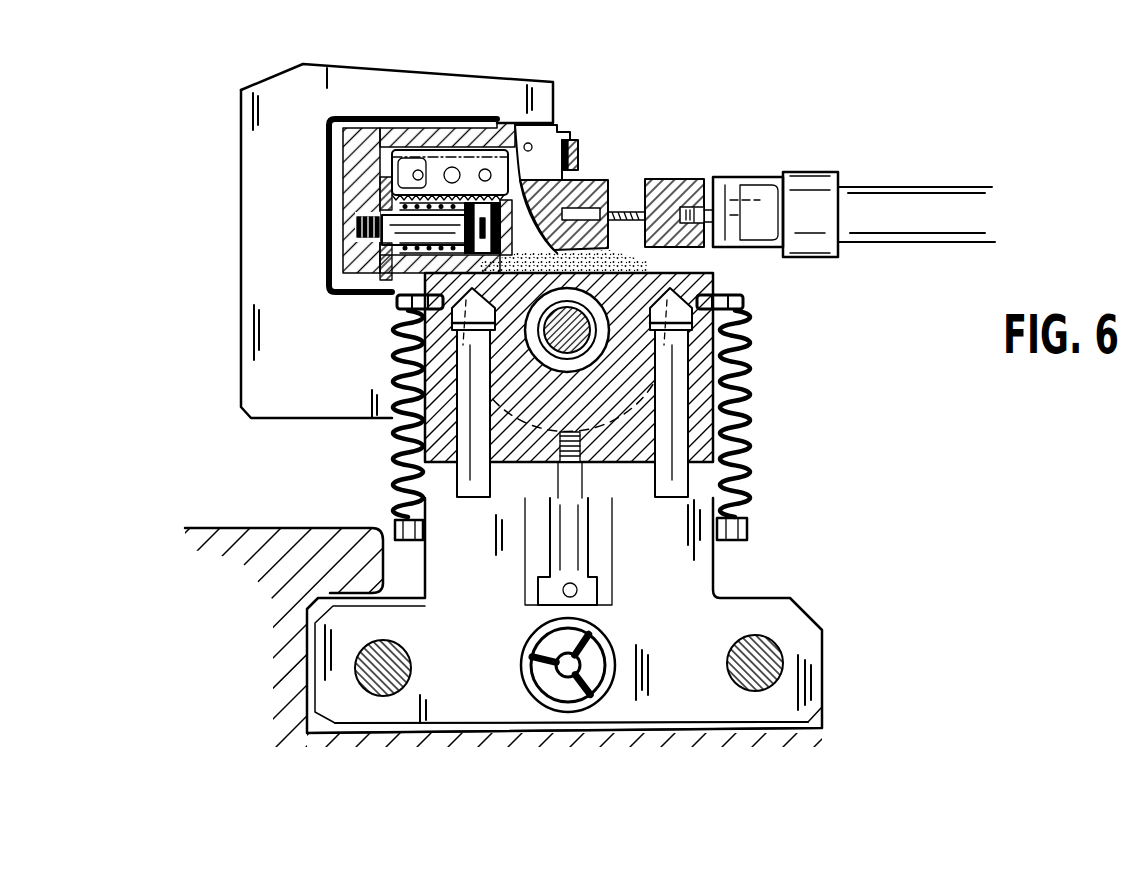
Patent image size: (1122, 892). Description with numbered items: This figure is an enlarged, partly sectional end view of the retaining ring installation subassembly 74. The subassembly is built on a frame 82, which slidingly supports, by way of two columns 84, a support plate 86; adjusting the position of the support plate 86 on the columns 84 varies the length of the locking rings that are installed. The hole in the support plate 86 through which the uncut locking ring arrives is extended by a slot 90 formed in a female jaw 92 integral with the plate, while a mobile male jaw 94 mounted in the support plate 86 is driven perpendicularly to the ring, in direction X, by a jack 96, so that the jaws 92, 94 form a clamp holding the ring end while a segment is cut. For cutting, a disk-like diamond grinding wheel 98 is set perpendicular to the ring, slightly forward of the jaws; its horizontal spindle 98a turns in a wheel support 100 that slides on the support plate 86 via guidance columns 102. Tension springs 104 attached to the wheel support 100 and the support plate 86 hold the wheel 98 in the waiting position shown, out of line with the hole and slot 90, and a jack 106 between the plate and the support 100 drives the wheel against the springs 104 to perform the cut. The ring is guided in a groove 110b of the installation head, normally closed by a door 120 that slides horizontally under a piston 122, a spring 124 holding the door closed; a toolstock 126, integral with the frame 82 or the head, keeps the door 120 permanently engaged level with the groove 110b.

The retaining ring installation subassembly 74 is at (787, 545).
The frame 82 is at (243, 528).
The columns 84 is at (413, 658).
The support plate 86 is at (822, 707).
The slot 90 is at (603, 180).
The female jaw 92 is at (528, 160).
The mobile male jaw 94 is at (687, 180).
The jack 96 is at (883, 200).
The diamond grinding wheel 98 is at (640, 260).
The horizontal spindle 98a is at (545, 358).
The wheel support 100 is at (715, 398).
The guidance columns 102 is at (455, 470).
The tension springs 104 is at (395, 362).
The jack 106 is at (553, 545).
The groove 110b is at (580, 150).
The door 120 is at (353, 192).
The piston 122 is at (432, 148).
The spring 124 is at (385, 262).
The toolstock 126 is at (241, 108).